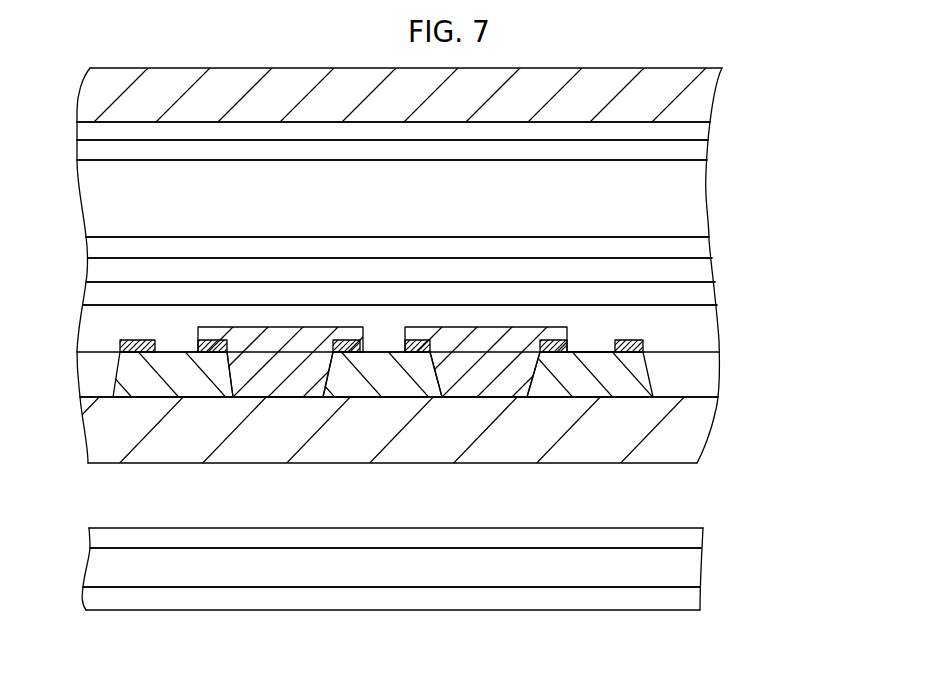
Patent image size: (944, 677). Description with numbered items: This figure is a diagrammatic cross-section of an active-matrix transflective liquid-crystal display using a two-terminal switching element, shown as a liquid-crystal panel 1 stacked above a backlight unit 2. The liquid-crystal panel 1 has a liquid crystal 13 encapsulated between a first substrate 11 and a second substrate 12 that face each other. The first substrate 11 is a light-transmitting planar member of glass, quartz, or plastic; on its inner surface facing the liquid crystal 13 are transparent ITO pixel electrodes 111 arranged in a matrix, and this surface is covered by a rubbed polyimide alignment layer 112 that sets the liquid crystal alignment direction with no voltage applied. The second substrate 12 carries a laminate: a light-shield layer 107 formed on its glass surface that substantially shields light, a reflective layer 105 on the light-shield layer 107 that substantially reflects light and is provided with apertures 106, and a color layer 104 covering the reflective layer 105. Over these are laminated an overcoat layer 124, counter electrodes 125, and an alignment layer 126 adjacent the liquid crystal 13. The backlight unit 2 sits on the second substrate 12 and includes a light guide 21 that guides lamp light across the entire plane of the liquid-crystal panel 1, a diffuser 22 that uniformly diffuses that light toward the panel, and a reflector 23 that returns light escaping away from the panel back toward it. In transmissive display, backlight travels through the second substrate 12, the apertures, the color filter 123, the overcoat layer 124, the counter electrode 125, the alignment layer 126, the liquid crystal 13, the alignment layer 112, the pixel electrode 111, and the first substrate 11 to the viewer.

The liquid-crystal panel 1 is at (812, 62).
The first substrate 11 is at (710, 97).
The pixel electrode 111 is at (708, 133).
The alignment layer 112 is at (707, 160).
The liquid crystal 13 is at (704, 195).
The alignment layer 126 is at (708, 244).
The counter electrode 125 is at (712, 271).
The overcoat layer 124 is at (708, 294).
The color filter (color layer) 123 is at (708, 329).
The second substrate 12 is at (706, 421).
The color layer 104 is at (480, 345).
The reflective layer 105 is at (566, 337).
The aperture 106 is at (602, 340).
The light-shield layer 107 is at (597, 363).
The backlight unit 2 is at (803, 523).
The diffuser 22 is at (701, 533).
The light guide 21 is at (700, 567).
The reflector 23 is at (696, 600).